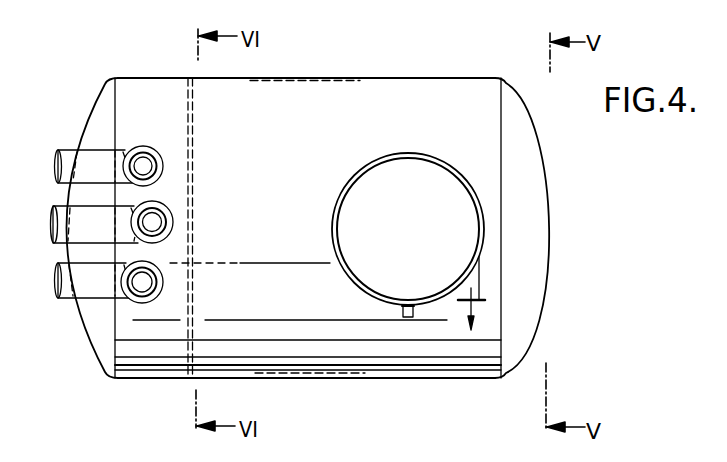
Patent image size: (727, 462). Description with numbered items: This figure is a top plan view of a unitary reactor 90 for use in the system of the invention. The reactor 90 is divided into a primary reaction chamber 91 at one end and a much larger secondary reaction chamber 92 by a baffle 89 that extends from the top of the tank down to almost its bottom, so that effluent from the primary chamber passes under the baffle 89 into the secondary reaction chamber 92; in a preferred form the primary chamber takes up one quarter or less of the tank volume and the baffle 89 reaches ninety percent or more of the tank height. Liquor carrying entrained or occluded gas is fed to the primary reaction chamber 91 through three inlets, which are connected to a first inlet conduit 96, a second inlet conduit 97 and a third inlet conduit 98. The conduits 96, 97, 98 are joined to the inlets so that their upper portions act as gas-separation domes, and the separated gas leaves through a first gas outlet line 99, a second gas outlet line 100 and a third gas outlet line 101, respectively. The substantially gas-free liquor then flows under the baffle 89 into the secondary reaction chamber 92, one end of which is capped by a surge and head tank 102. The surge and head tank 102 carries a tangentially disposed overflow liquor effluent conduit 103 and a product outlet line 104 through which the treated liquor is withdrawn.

The baffle 89 is at (193, 137).
The reactor 90 is at (297, 88).
The primary reaction chamber 91 is at (143, 86).
The secondary reaction chamber 92 is at (422, 92).
The first inlet conduit 96 is at (68, 151).
The second inlet conduit 97 is at (126, 232).
The third inlet conduit 98 is at (95, 288).
The first gas outlet line 99 is at (148, 161).
The second gas outlet line 100 is at (160, 221).
The third gas outlet line 101 is at (150, 282).
The surge and head tank 102 is at (352, 211).
The overflow liquor effluent conduit 103 is at (478, 276).
The product outlet line 104 is at (417, 314).